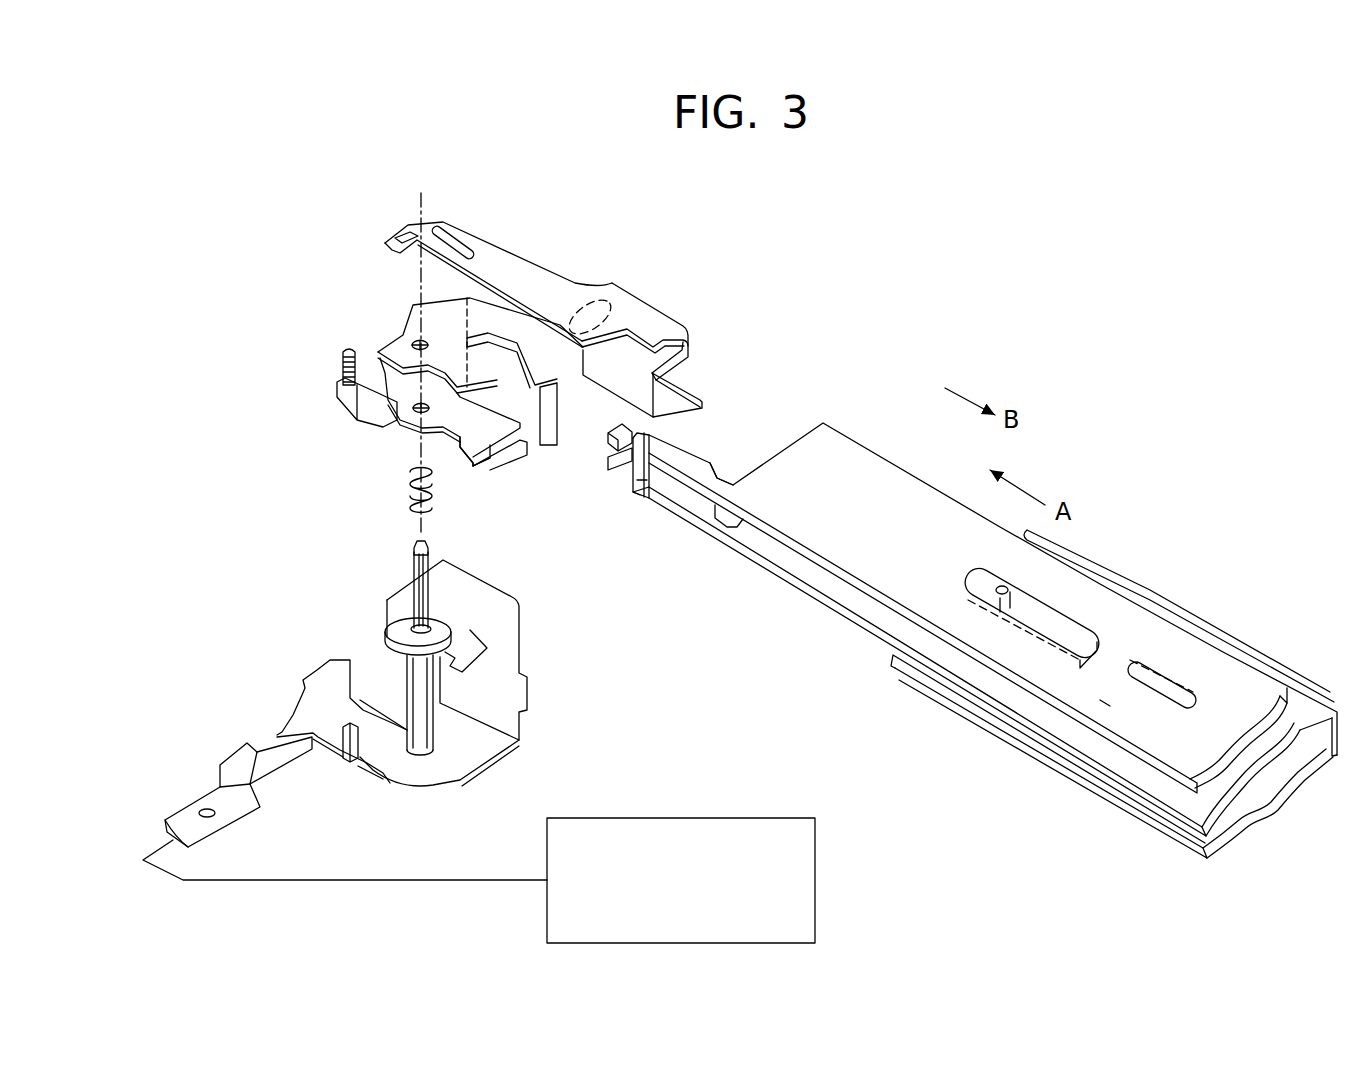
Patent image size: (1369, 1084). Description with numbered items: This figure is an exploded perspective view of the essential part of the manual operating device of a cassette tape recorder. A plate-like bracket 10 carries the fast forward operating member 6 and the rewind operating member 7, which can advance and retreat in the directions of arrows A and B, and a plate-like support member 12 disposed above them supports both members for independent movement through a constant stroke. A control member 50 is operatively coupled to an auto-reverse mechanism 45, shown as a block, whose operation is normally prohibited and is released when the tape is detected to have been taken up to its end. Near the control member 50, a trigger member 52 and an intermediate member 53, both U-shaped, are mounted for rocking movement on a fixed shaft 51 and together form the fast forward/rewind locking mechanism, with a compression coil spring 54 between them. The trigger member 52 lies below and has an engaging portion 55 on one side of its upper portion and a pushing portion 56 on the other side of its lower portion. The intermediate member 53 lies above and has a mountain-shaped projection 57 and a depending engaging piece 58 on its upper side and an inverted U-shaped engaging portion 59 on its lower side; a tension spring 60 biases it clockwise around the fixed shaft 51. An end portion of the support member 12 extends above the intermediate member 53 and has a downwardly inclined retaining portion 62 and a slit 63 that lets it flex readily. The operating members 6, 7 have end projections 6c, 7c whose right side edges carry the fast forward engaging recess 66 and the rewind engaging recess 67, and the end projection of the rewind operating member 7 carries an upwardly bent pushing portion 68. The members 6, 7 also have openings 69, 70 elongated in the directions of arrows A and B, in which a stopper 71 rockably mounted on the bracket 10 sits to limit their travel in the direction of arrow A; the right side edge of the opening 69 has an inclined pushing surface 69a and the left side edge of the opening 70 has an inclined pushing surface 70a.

The fast forward operating member 6 is at (860, 440).
The end projection 6c is at (607, 433).
The rewind operating member 7 is at (798, 596).
The end projection 7c is at (622, 450).
The bracket 10 is at (1062, 776).
The support member 12 is at (660, 313).
The auto-reverse mechanism 45 is at (817, 880).
The control member 50 is at (230, 747).
The fixed shaft 51 is at (413, 683).
The trigger member 52 is at (527, 657).
The intermediate member 53 is at (405, 436).
The compression coil spring 54 is at (407, 495).
The engaging portion 55 is at (470, 645).
The pushing portion 56 is at (292, 713).
The mountain-shaped projection 57 is at (465, 456).
The depending engaging piece 58 is at (548, 450).
The inverted U-shaped engaging portion 59 is at (500, 452).
The tension spring 60 is at (340, 373).
The retaining portion 62 is at (400, 254).
The slit 63 is at (453, 242).
The fast forward engaging recess 66 is at (728, 480).
The rewind engaging recess 67 is at (736, 527).
The pushing portion 68 is at (634, 497).
The opening 69 is at (1090, 618).
The inclined pushing surface 69a is at (1130, 655).
The opening 70 is at (1097, 657).
The inclined pushing surface 70a is at (1117, 677).
The stopper 71 is at (1047, 610).